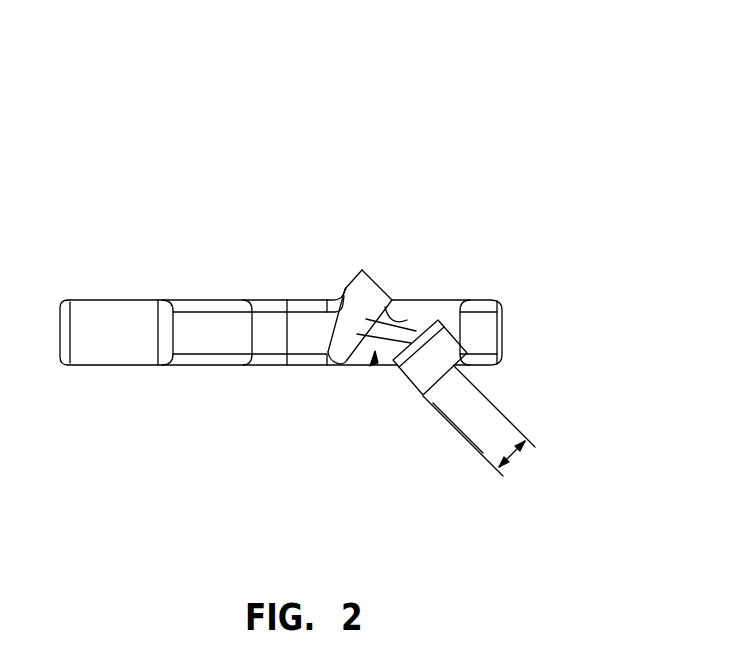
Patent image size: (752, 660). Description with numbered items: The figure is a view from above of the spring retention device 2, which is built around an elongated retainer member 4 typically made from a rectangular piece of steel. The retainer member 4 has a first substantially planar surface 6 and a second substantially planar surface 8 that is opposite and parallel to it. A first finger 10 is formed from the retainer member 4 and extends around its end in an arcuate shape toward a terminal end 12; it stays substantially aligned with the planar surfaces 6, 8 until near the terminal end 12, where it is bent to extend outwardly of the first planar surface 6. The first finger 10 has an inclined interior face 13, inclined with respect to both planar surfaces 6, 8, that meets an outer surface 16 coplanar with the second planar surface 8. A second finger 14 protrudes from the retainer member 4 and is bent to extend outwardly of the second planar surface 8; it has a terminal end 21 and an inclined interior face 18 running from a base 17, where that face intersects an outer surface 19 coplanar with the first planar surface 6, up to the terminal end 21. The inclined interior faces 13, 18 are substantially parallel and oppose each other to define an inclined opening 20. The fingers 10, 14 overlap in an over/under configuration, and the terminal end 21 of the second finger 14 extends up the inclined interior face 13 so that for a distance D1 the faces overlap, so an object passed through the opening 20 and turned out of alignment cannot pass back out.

The spring retention device 2 is at (218, 190).
The retainer member 4 is at (95, 323).
The second substantially planar surface 8 is at (192, 301).
The first substantially planar surface 6 is at (180, 367).
The outer surface 19 is at (293, 367).
The second finger 14 is at (344, 288).
The terminal end 21 is at (383, 277).
The inclined interior face 18 is at (423, 312).
The base 17 is at (335, 368).
The opening 20 is at (371, 368).
The inclined interior face 13 is at (427, 309).
The first finger 10 is at (502, 333).
The outer surface 16 is at (467, 353).
The terminal end 12 is at (402, 383).
The overlap distance D1 is at (513, 453).